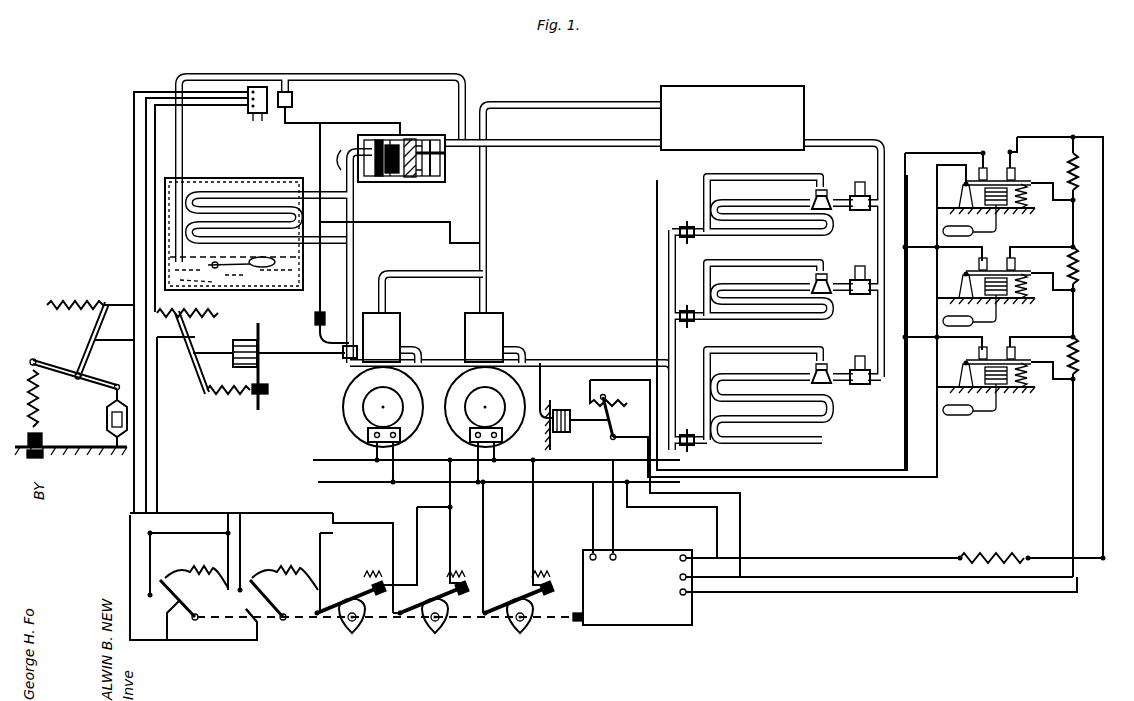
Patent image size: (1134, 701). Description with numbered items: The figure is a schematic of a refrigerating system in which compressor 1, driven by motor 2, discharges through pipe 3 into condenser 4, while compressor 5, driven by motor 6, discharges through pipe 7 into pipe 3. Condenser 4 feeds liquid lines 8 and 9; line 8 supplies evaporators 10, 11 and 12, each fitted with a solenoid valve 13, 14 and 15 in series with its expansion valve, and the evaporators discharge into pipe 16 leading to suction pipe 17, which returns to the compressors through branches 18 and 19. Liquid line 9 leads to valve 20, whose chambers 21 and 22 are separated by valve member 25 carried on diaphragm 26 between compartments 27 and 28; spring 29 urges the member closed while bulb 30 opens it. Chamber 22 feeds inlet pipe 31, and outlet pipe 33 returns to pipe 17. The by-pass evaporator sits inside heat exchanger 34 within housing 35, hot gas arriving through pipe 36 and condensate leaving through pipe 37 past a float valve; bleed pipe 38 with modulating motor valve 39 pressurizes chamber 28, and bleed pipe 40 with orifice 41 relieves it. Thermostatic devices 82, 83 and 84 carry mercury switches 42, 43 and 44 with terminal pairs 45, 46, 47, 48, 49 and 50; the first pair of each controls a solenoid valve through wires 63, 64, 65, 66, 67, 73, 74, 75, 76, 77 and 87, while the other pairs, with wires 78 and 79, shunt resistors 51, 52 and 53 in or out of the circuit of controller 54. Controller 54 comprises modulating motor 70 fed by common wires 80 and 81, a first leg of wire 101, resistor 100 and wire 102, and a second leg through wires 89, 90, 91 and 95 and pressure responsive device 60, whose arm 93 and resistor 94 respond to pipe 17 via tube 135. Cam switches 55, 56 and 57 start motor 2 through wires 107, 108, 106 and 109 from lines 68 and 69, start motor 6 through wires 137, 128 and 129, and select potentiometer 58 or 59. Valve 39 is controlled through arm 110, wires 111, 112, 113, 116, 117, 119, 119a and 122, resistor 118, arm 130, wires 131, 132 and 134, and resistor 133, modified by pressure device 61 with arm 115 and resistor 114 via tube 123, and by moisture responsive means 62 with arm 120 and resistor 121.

The compressor 1 is at (500, 329).
The motor 2 is at (470, 400).
The discharge pipe 3 is at (353, 76).
The condenser 4 is at (727, 96).
The compressor 5 is at (404, 329).
The motor 6 is at (362, 405).
The pipe 7 is at (428, 273).
The liquid line 8 is at (845, 143).
The liquid line 9 is at (579, 147).
The evaporator 10 is at (741, 208).
The evaporator 11 is at (737, 292).
The evaporator 12 is at (754, 382).
The solenoid valve 13 is at (861, 211).
The solenoid valve 14 is at (861, 296).
The solenoid valve 15 is at (861, 386).
The pipe 16 is at (668, 290).
The suction pipe 17 is at (603, 362).
The branch 18 is at (529, 350).
The branch 19 is at (421, 350).
The valve 20 is at (433, 127).
The chamber 21 is at (443, 170).
The chamber 22 is at (434, 177).
The valve member 25 is at (446, 155).
The diaphragm 26 is at (393, 177).
The compartment 27 is at (364, 143).
The control chamber 28 is at (411, 179).
The spring 29 is at (408, 138).
The thermostatic bulb 30 is at (356, 241).
The inlet pipe 31 is at (364, 198).
The outlet pipe 33 is at (354, 286).
The heat exchanger 34 is at (312, 164).
The outer housing 35 is at (195, 178).
The pipe 36 is at (451, 235).
The pipe 37 is at (241, 192).
The bleed pipe 38 is at (369, 123).
The modulating motor valve 39 is at (272, 118).
The bleed pipe 40 is at (340, 160).
The orifice 41 is at (316, 320).
The mercury switch 42 is at (1014, 181).
The mercury switch 43 is at (1016, 272).
The mercury switch 44 is at (1016, 361).
The terminals 45 is at (980, 166).
The terminals 46 is at (1008, 166).
The terminals 47 is at (981, 257).
The terminals 48 is at (1010, 256).
The terminals 49 is at (982, 346).
The terminals 50 is at (1012, 346).
The resistor 51 is at (1080, 160).
The resistor 52 is at (1080, 255).
The resistor 53 is at (1080, 345).
The controller 54 is at (451, 672).
The cam operated switch 55 is at (540, 630).
The cam operated switch 56 is at (455, 630).
The cam operated switch 57 is at (374, 629).
The potentiometer 58 is at (296, 629).
The potentiometer 59 is at (211, 655).
The pressure responsive device 60 is at (579, 437).
The pressure responsive device 61 is at (271, 368).
The moisture responsive means 62 is at (35, 346).
The wire 63 is at (864, 471).
The wire 64 is at (938, 299).
The wire 65 is at (938, 209).
The conductor 66 is at (906, 204).
The wire 67 is at (933, 153).
The line 68 is at (316, 459).
The line 69 is at (334, 481).
The modulating motor 70 is at (637, 542).
The wire 73 is at (909, 445).
The conductor 74 is at (930, 247).
The pipe branch 75 is at (896, 270).
The wire 76 is at (930, 337).
The wire 77 is at (892, 370).
The wire 78 is at (1050, 185).
The wire 79 is at (1061, 137).
The common wire 80 is at (818, 579).
The common wire 81 is at (1103, 440).
The thermostatic device 82 is at (1035, 218).
The thermostatic device 83 is at (1038, 308).
The thermostatic device 84 is at (1037, 400).
The wire 87 is at (937, 365).
The wire 89 is at (1074, 217).
The wire 90 is at (1074, 323).
The wire 91 is at (856, 593).
The arm 93 is at (615, 416).
The potentiometer resistor 94 is at (620, 402).
The wire 95 is at (666, 508).
The resistor 100 is at (996, 556).
The wire 101 is at (1050, 556).
The wire 102 is at (809, 556).
The wire 106 is at (478, 446).
The wire 107 is at (535, 522).
The wire 108 is at (485, 522).
The wire 109 is at (500, 443).
The arm 110 is at (268, 590).
The wire 111 is at (233, 641).
The wire 112 is at (133, 174).
The wire 113 is at (156, 147).
The potentiometer resistor 114 is at (228, 282).
The switch arm 115 is at (192, 362).
The wire 116 is at (158, 443).
The wire 117 is at (418, 557).
The potentiometer resistor 118 is at (272, 573).
The wire 119 is at (133, 490).
The wire 119a is at (206, 557).
The arm 120 is at (93, 327).
The potentiometer resistor 121 is at (154, 276).
The wire 122 is at (145, 244).
The tube 123 is at (343, 368).
The wire 128 is at (416, 508).
The wire 129 is at (400, 446).
The arm 130 is at (178, 584).
The wire 131 is at (170, 628).
The wire 132 is at (283, 530).
The potentiometer resistor 133 is at (224, 578).
The wire 134 is at (152, 559).
The tube 135 is at (542, 376).
The conductor 137 is at (450, 503).